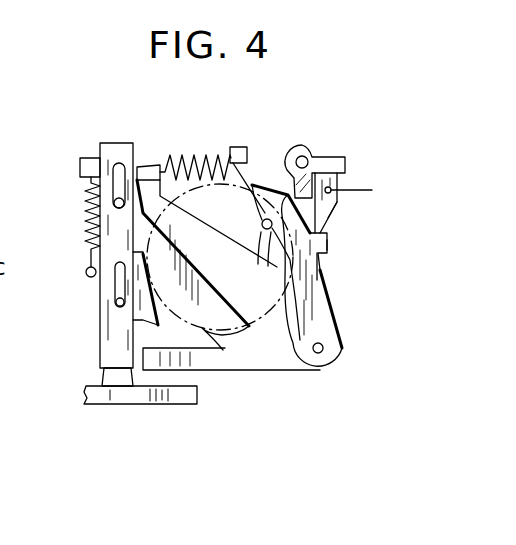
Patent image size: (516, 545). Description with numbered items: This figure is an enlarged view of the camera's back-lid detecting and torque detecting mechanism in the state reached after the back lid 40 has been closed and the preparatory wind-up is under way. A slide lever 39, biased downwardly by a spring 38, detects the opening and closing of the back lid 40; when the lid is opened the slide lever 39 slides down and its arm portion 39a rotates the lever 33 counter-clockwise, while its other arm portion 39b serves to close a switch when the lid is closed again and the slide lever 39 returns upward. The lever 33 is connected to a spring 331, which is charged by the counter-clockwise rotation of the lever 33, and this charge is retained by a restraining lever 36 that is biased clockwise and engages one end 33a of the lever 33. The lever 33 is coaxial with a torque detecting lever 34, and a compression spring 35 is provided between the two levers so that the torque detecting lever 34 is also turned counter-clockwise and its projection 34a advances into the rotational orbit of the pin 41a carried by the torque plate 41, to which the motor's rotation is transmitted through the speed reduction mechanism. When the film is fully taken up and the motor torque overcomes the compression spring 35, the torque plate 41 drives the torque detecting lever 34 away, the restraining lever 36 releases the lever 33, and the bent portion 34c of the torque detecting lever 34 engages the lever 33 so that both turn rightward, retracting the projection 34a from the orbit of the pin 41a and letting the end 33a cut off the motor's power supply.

The lever 33 is at (265, 356).
The one end of the lever 33a is at (337, 205).
The spring 331 is at (358, 190).
The torque detecting lever 34 is at (319, 372).
The projection 34a is at (262, 222).
The bent portion 34c is at (328, 243).
The compression spring 35 is at (172, 152).
The restraining lever 36 is at (304, 147).
The spring 38 is at (85, 218).
The slide lever 39 is at (108, 336).
The arm portion 39a is at (162, 314).
The other arm portion 39b is at (97, 158).
The back lid 40 is at (155, 396).
The torque plate 41 is at (213, 335).
The pin 41a is at (263, 232).